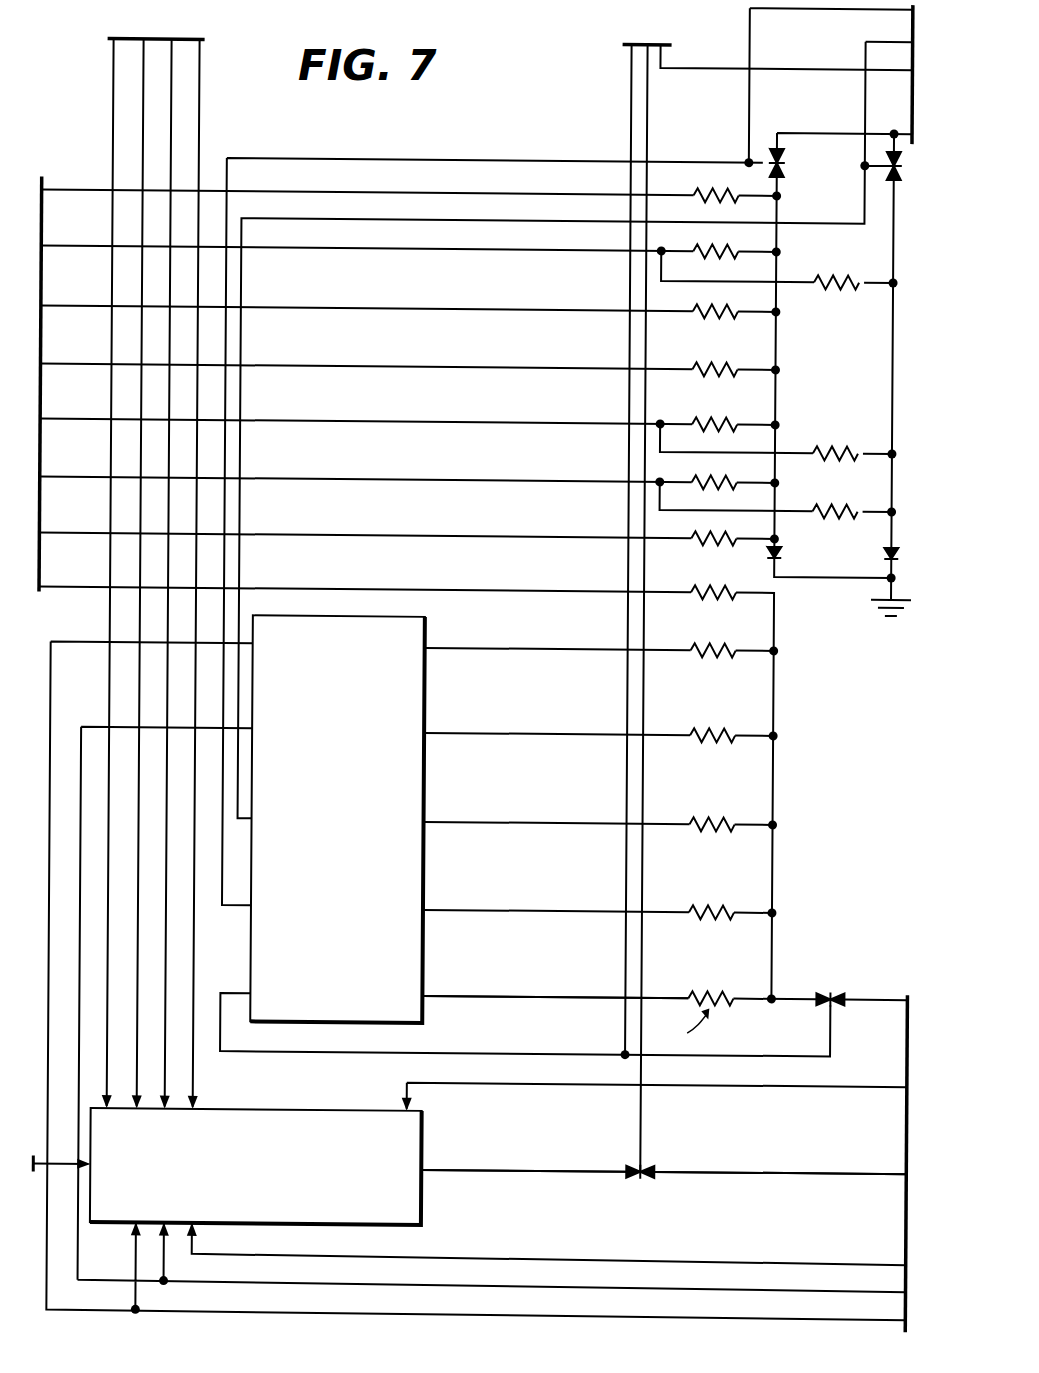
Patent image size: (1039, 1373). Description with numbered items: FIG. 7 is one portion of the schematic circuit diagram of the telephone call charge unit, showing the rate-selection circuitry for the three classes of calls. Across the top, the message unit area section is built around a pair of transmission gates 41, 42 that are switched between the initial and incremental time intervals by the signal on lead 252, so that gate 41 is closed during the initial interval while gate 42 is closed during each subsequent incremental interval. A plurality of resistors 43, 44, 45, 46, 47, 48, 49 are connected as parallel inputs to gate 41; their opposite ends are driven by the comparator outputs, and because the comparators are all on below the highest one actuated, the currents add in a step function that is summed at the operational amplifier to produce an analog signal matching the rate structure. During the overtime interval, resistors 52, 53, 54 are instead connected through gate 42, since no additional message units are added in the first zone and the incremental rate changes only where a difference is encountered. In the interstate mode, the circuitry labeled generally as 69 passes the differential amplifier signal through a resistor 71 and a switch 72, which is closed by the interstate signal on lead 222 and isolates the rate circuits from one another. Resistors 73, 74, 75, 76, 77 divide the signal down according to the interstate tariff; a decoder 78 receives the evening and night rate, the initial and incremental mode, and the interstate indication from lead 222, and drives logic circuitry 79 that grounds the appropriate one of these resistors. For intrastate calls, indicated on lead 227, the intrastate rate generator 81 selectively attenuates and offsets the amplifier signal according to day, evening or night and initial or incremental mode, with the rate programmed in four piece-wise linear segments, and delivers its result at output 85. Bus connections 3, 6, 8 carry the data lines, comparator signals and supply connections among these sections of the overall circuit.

The data lines bus 3 is at (506, 591).
The bus 6 is at (53, 676).
The bus 8 is at (917, 668).
The lead 252 is at (824, 10).
The transmission gate 41 is at (779, 168).
The transmission gate 42 is at (894, 171).
The resistor 43 is at (689, 537).
The resistor 44 is at (689, 479).
The resistor 45 is at (708, 421).
The resistor 46 is at (706, 360).
The resistor 47 is at (694, 308).
The resistor 48 is at (692, 246).
The resistor 49 is at (694, 190).
The resistor 52 is at (832, 503).
The resistor 53 is at (838, 439).
The resistor 54 is at (851, 272).
The interstate circuitry 69 is at (684, 1024).
The resistor 71 is at (714, 587).
The switch 72 is at (830, 992).
The resistor 73 is at (706, 639).
The resistor 74 is at (709, 729).
The resistor 75 is at (710, 816).
The resistor 76 is at (706, 907).
The resistor 77 is at (708, 991).
The decoder 78 is at (424, 622).
The logic circuitry 79 is at (548, 997).
The intrastate generator 81 is at (363, 1113).
The output 85 is at (538, 1171).
The lead 222 is at (521, 1055).
The lead 227 is at (645, 1181).